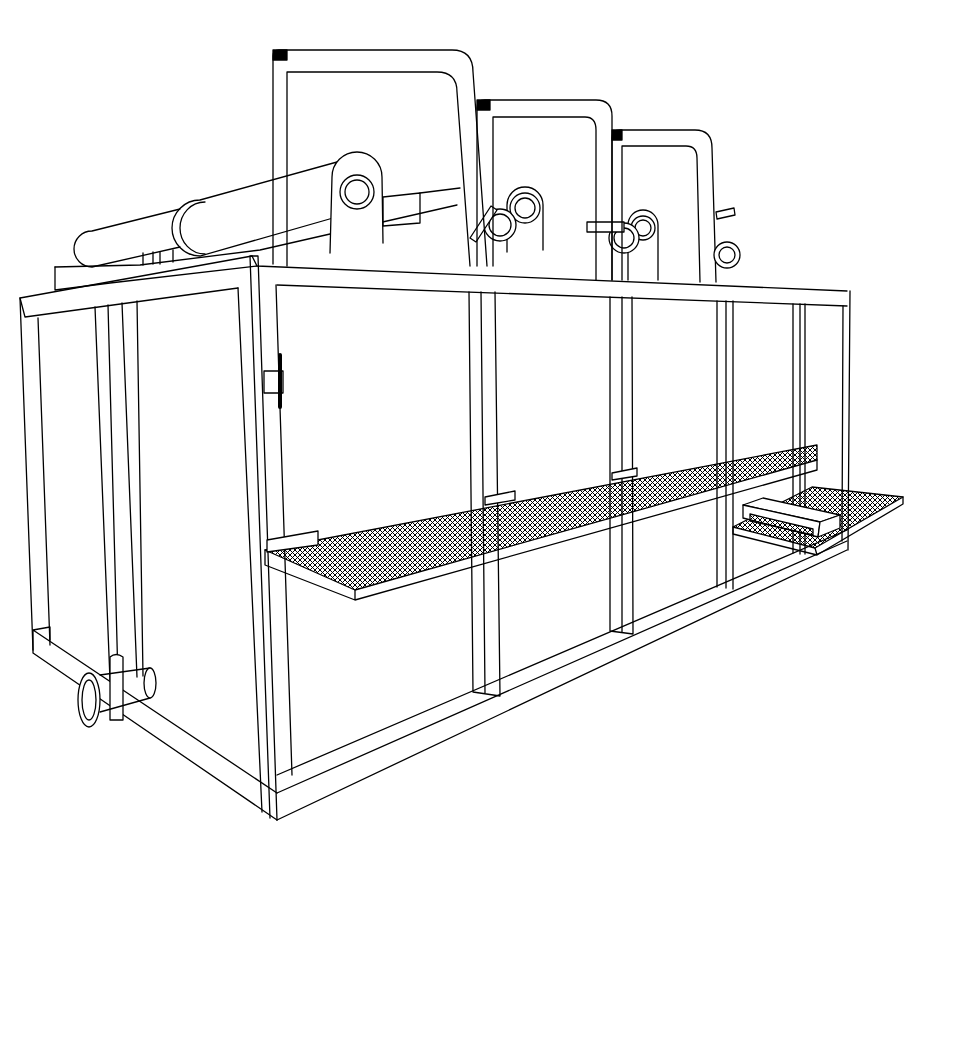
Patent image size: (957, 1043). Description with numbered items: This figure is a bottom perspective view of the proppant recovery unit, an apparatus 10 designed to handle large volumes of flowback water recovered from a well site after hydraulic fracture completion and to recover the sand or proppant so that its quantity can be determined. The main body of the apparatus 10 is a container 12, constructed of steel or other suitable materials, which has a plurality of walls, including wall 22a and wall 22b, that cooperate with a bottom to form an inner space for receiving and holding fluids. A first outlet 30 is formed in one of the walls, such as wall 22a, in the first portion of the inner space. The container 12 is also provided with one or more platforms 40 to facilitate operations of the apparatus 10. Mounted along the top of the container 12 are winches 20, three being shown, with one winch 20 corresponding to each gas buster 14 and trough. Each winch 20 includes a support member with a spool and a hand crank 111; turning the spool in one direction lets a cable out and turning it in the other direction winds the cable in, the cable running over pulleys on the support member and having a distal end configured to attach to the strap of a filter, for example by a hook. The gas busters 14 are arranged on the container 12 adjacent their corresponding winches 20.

The apparatus 10 is at (203, 42).
The container 12 is at (27, 424).
The gas buster 14 is at (127, 224).
The winch 20 is at (357, 52).
The wall 22a is at (80, 553).
The wall 22b is at (363, 707).
The first outlet 30 is at (106, 722).
The platform 40 is at (577, 523).
The hand crank 111 is at (720, 219).